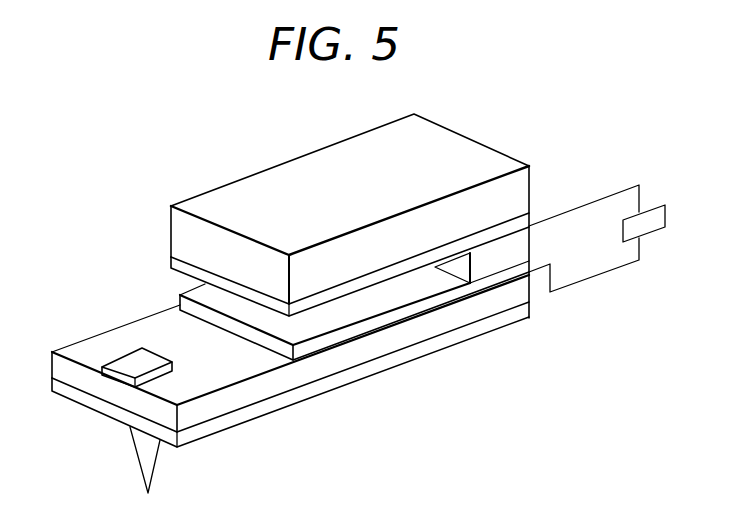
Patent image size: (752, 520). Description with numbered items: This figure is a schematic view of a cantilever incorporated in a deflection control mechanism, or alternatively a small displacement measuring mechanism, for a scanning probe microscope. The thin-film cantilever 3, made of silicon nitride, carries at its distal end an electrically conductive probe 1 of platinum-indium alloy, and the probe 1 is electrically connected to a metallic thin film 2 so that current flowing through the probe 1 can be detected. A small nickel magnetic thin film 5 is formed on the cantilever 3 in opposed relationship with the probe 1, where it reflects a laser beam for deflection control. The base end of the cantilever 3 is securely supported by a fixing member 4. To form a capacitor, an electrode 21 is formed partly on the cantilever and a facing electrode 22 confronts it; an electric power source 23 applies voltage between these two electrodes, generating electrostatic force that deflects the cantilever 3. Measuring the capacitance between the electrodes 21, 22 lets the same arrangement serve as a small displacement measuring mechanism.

The probe 1 is at (155, 462).
The metallic thin film 2 is at (310, 393).
The thin-film cantilever 3 is at (377, 345).
The fixing member 4 is at (518, 200).
The magnetic thin film 5 is at (122, 362).
The electrode 21 is at (453, 297).
The facing electrode 22 is at (495, 235).
The electric power source 23 is at (666, 218).